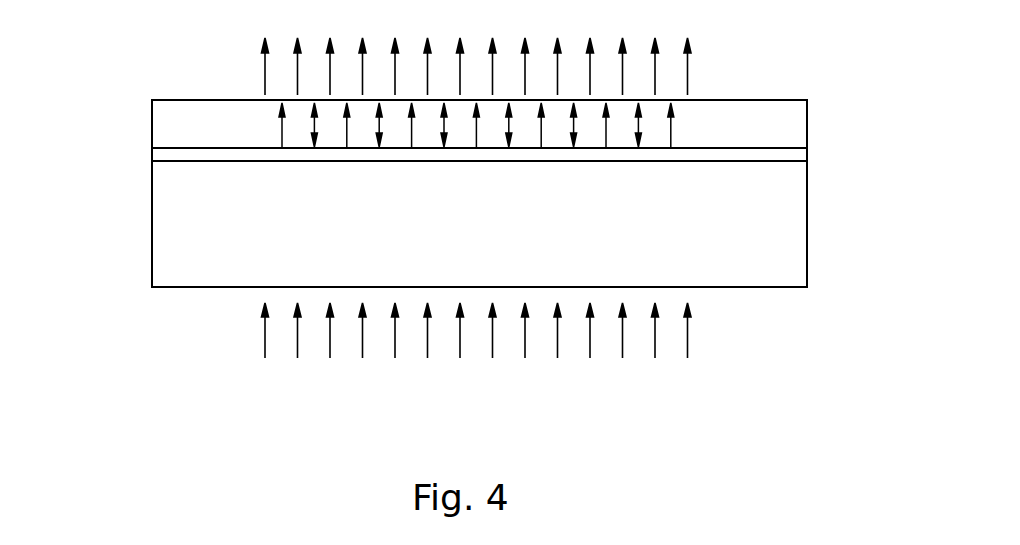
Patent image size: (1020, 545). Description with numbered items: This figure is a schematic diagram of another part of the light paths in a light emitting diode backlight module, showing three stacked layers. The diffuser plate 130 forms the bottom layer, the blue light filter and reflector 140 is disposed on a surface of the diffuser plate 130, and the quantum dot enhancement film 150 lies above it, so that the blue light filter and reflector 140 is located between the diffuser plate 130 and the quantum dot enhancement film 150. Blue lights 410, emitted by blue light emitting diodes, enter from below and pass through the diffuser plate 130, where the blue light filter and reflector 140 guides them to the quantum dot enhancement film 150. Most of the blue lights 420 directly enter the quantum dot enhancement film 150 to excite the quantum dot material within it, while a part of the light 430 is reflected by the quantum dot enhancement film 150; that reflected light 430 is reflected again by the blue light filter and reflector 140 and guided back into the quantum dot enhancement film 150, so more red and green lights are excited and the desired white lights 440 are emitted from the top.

The diffuser plate 130 is at (166, 222).
The blue light filter and reflector 140 is at (166, 156).
The quantum dot enhancement film 150 is at (166, 122).
The blue lights 410 is at (265, 333).
The blue lights 420 is at (671, 133).
The light reflected by the quantum dot enhancement film 430 is at (638, 125).
The white lights 440 is at (688, 72).